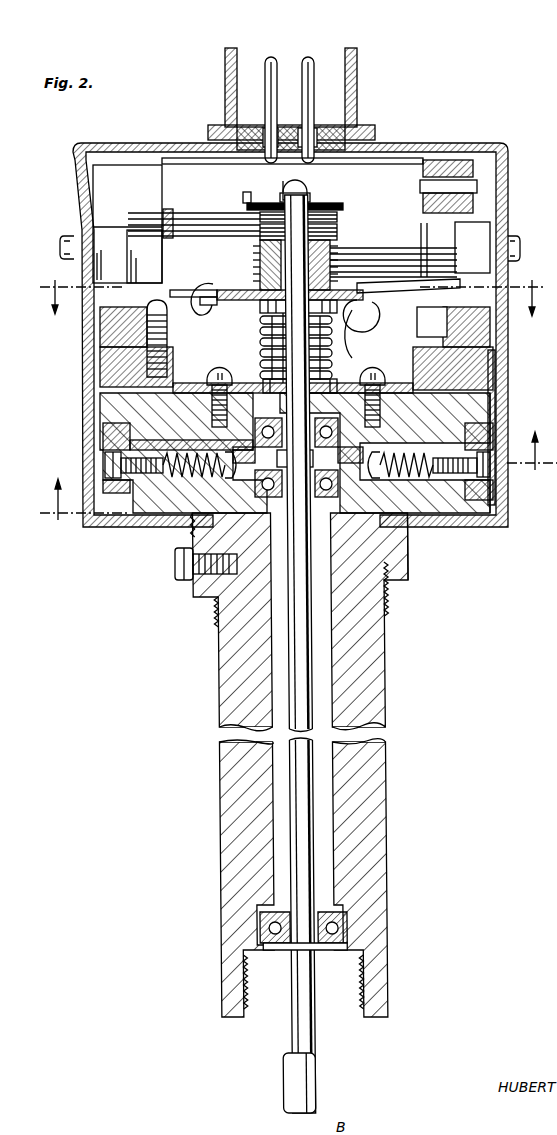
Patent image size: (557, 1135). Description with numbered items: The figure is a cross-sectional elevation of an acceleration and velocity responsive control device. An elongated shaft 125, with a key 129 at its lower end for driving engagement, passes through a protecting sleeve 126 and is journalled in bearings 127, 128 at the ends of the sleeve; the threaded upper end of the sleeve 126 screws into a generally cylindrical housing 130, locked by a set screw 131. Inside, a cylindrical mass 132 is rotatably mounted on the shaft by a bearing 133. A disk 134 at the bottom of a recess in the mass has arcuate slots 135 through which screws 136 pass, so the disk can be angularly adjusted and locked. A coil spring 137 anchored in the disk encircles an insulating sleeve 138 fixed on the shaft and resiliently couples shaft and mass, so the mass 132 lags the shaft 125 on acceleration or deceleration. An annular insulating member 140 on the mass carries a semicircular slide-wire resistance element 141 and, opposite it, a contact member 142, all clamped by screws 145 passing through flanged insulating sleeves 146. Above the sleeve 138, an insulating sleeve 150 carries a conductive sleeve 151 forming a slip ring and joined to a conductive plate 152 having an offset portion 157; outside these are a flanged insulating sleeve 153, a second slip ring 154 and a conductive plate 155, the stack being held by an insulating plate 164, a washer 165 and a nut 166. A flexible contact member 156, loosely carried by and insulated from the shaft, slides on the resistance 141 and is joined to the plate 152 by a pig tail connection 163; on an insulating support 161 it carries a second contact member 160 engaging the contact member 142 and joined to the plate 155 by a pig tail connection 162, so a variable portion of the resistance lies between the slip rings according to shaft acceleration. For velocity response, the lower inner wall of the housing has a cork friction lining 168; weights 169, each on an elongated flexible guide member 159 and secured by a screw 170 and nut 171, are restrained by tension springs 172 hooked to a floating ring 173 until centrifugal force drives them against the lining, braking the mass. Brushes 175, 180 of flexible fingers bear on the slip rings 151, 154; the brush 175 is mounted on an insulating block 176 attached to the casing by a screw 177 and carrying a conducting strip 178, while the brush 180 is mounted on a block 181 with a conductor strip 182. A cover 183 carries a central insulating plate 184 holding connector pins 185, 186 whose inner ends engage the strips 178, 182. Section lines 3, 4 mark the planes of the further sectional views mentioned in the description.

The section line 3- 3 is at (291, 293).
The section line 4- 4 is at (295, 477).
The shaft 125 is at (305, 1045).
The protecting sleeve 126 is at (370, 846).
The bearing 127 is at (195, 540).
The bearing 128 is at (252, 920).
The key 129 is at (274, 1078).
The housing 130 is at (470, 515).
The set screw 131 is at (188, 582).
The mass 132 is at (490, 358).
The bearing 133 is at (336, 390).
The disk 134 is at (190, 383).
The arcuate slots 135 is at (378, 376).
The screws 136 is at (221, 374).
The coil spring 137 is at (268, 373).
The insulating sleeve 138 is at (334, 326).
The annular insulating member 140 is at (100, 352).
The slide-wire resistance element 141 is at (100, 326).
The contact member 142 is at (490, 328).
The screws 145 is at (180, 290).
The flanged insulating sleeves 146 is at (205, 284).
The insulating sleeve 150 is at (312, 206).
The conductive sleeve 151 is at (337, 217).
The plate 152 is at (258, 300).
The flanged insulating sleeve 153 is at (337, 234).
The slip ring 154 is at (258, 254).
The conductive plate 155 is at (258, 282).
The contact member 156 is at (210, 306).
The offset portion 157 is at (260, 306).
The flexible guide member 159 is at (150, 500).
The contact member 160 is at (412, 290).
The insulating support 161 is at (357, 310).
The pig tail connection 162 is at (350, 345).
The pig tail connection 163 is at (168, 320).
The insulating plate 164 is at (247, 196).
The washer 165 is at (283, 194).
The nut 166 is at (300, 188).
The lining 168 is at (496, 385).
The weights 169 is at (105, 485).
The screw 170 is at (497, 432).
The nut 171 is at (103, 445).
The tension springs 172 is at (192, 478).
The floating ring 173 is at (398, 565).
The brush 175 is at (184, 213).
The insulating block 176 is at (100, 202).
The screw 177 is at (72, 243).
The conducting strip 178 is at (178, 158).
The brush 180 is at (398, 248).
The block 181 is at (495, 212).
The conductor strip 182 is at (407, 160).
The cover 183 is at (488, 143).
The insulating plate 184 is at (248, 126).
The connector pin 185 is at (278, 58).
The connector pin 186 is at (291, 80).